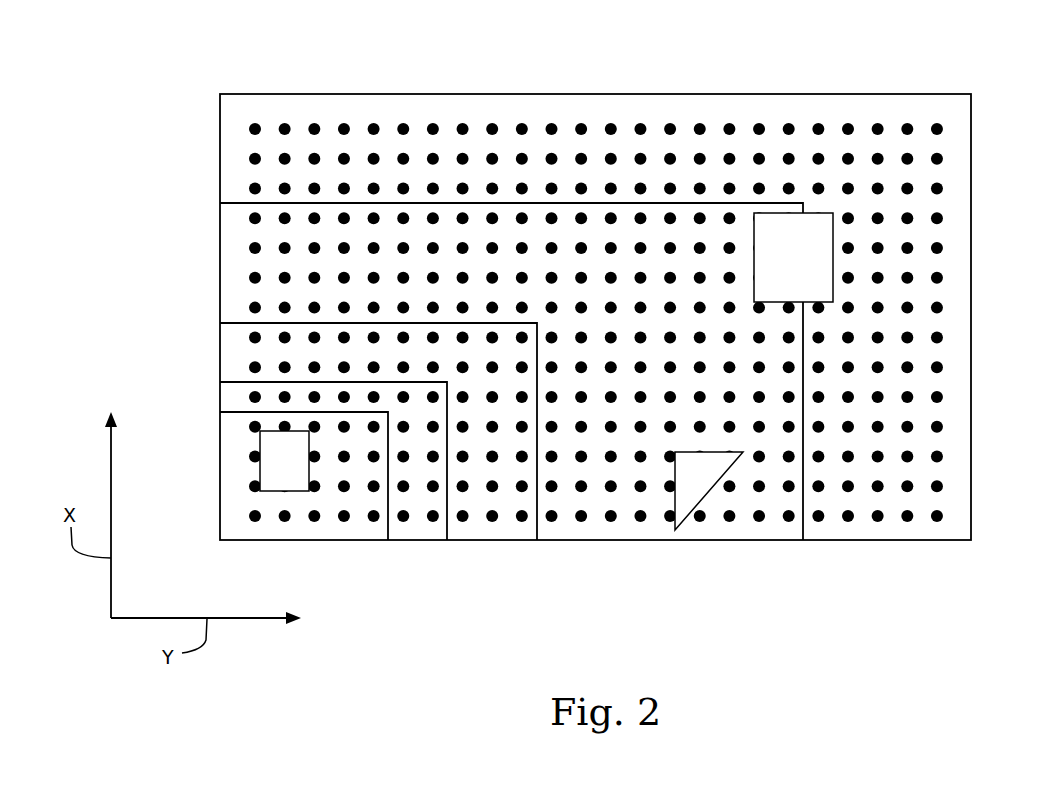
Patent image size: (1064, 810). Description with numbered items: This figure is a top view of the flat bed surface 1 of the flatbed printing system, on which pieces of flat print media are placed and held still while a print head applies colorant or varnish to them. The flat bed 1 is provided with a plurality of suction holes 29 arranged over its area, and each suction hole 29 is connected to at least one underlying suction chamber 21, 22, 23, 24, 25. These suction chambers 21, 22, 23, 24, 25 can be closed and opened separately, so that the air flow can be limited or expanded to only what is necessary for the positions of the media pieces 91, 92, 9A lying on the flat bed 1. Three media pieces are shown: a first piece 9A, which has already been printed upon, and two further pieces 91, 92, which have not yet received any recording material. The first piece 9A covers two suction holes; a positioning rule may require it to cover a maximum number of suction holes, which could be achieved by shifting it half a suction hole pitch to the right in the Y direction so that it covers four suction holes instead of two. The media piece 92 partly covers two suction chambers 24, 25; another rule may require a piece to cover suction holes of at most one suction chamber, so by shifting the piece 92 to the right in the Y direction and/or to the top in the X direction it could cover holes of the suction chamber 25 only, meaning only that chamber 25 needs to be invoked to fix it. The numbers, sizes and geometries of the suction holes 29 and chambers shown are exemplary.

The flatbed surface 1 is at (913, 93).
The suction hole 29 is at (284, 123).
The suction chamber 21 is at (308, 531).
The suction chamber 22 is at (428, 531).
The suction chamber 23 is at (505, 531).
The suction chamber 24 is at (692, 531).
The suction chamber 25 is at (900, 531).
The first piece of media 9A is at (260, 471).
The piece of media 91 is at (675, 470).
The piece of media 92 is at (833, 239).